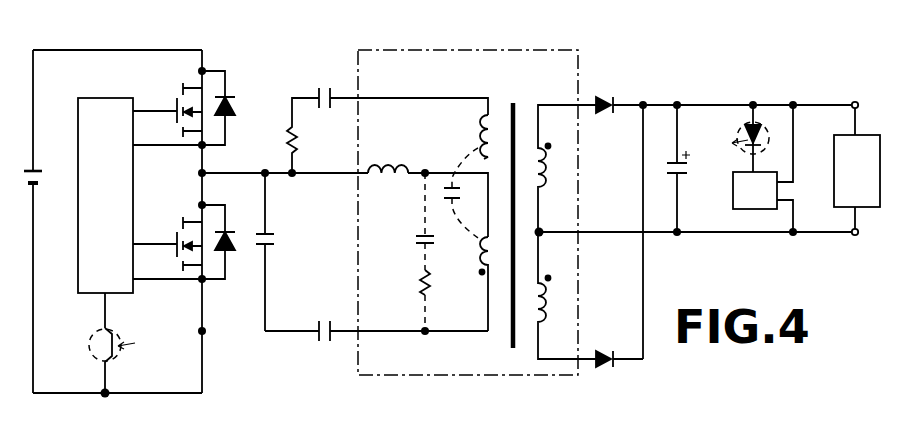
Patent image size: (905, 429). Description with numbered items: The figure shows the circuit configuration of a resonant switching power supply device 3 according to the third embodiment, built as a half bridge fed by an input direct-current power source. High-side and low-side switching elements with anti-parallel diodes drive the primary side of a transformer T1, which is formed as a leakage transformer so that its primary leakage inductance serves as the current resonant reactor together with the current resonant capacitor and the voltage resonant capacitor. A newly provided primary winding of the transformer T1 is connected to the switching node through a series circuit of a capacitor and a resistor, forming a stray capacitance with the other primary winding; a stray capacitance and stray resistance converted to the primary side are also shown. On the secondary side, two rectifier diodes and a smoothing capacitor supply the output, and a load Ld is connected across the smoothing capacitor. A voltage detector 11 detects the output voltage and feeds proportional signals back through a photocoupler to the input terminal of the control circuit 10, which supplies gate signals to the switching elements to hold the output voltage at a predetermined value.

The resonant switching power supply device 3 is at (311, 31).
The control circuit 10 is at (106, 98).
The voltage detector 11 is at (745, 211).
The transformer T1 is at (467, 50).
The load Ld is at (873, 135).